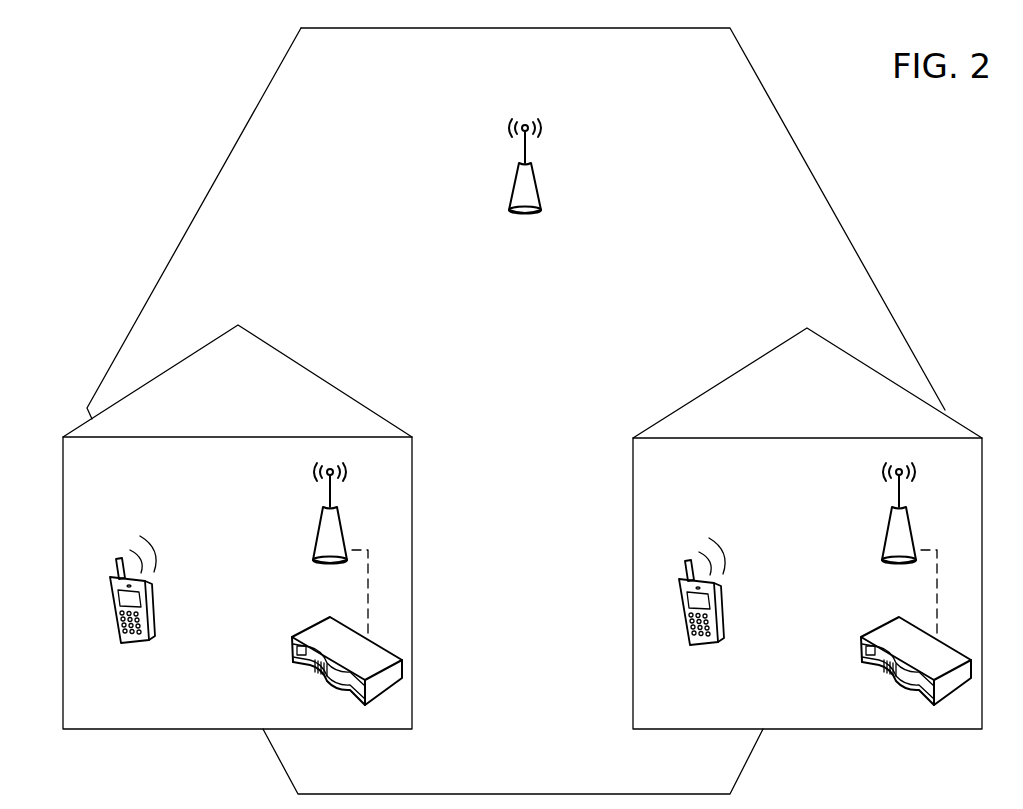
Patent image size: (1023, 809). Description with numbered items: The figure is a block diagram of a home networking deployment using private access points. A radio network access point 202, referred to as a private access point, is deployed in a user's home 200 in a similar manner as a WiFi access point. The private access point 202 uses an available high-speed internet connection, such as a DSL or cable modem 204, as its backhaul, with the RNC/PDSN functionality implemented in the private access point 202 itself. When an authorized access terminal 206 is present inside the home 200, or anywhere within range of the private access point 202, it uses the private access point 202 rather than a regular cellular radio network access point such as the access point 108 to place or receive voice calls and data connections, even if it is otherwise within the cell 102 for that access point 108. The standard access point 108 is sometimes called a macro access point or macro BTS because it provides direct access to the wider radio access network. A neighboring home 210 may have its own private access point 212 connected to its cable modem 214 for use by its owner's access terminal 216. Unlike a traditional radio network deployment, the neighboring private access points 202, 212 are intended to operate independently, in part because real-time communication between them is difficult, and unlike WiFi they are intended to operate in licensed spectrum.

The cell 102 is at (250, 96).
The access point 108 is at (503, 212).
The home 200 is at (181, 732).
The radio network access point 202 is at (308, 560).
The cable modem 204 is at (344, 634).
The access terminal 206 is at (113, 641).
The neighboring home 210 is at (735, 732).
The private access point 212 is at (899, 530).
The cable modem 214 is at (913, 634).
The access terminal 216 is at (702, 608).